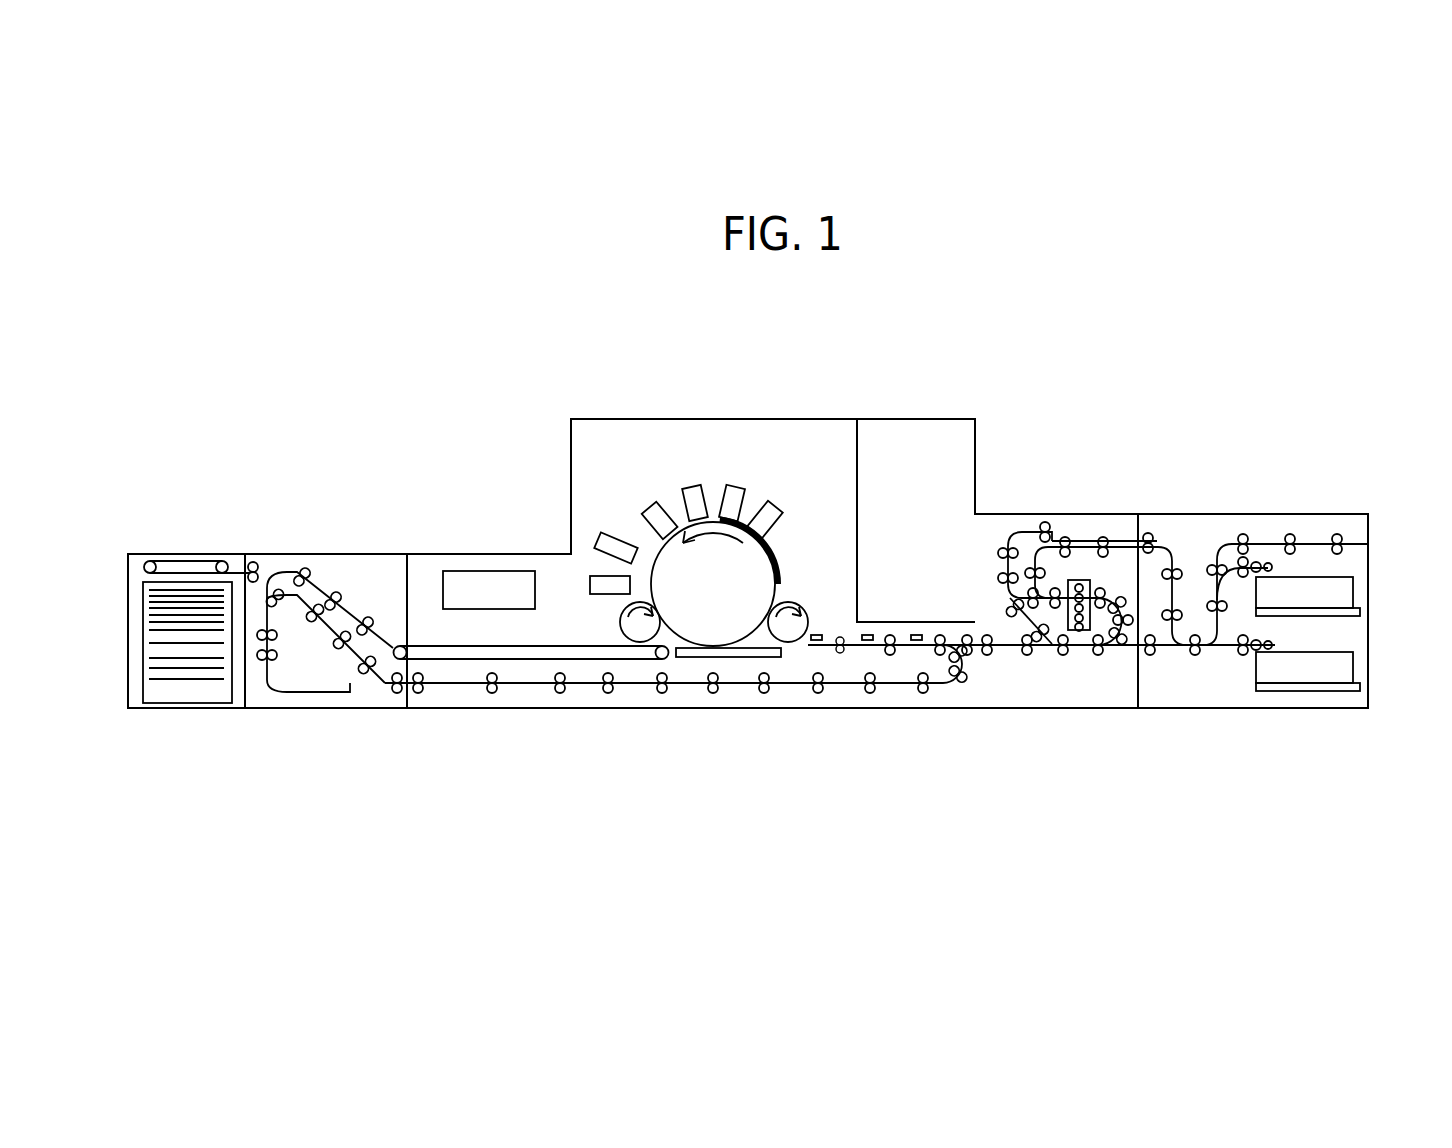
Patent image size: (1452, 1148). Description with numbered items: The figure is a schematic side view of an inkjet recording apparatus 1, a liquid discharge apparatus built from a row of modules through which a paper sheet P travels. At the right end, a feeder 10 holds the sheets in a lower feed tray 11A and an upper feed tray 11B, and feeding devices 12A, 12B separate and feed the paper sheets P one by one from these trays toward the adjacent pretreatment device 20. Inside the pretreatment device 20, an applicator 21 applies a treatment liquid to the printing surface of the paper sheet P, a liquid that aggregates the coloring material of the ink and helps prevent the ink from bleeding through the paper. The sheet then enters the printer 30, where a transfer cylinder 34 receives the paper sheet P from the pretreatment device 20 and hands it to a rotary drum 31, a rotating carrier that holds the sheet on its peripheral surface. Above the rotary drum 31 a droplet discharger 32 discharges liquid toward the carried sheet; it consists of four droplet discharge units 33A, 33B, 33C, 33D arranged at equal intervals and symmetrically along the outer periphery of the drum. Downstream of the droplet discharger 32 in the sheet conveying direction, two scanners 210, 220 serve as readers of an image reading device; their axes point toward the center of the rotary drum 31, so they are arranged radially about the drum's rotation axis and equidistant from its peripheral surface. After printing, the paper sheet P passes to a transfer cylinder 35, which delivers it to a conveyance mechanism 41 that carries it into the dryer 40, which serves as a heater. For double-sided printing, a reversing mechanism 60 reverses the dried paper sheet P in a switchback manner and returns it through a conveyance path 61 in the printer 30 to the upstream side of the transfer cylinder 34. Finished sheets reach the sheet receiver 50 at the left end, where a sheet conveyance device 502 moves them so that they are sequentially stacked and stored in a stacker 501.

The inkjet recording apparatus 1 is at (886, 356).
The feeder 10 is at (1347, 512).
The lower feed tray 11A is at (1338, 668).
The upper feed tray 11B is at (1338, 593).
The feeding device 12A is at (1276, 645).
The feeding device 12B is at (1263, 563).
The pretreatment device 20 is at (1030, 512).
The applicator 21 is at (1078, 580).
The printer 30 is at (578, 400).
The rotary drum 31 is at (695, 622).
The droplet discharger 32 is at (716, 453).
The droplet discharge unit 33A is at (789, 499).
The droplet discharge unit 33B is at (733, 487).
The droplet discharge unit 33C is at (695, 487).
The droplet discharge unit 33D is at (648, 506).
The transfer cylinder 34 is at (787, 603).
The transfer cylinder 35 is at (623, 620).
The paper sheet P is at (770, 548).
The scanner 210 is at (610, 535).
The scanner 220 is at (595, 585).
The dryer 40 is at (435, 553).
The conveyance mechanism 41 is at (531, 663).
The sheet receiver 50 is at (164, 553).
The stacker 501 is at (183, 706).
The sheet conveyance device 502 is at (193, 553).
The reversing mechanism 60 is at (332, 553).
The conveyance path 61 is at (797, 690).